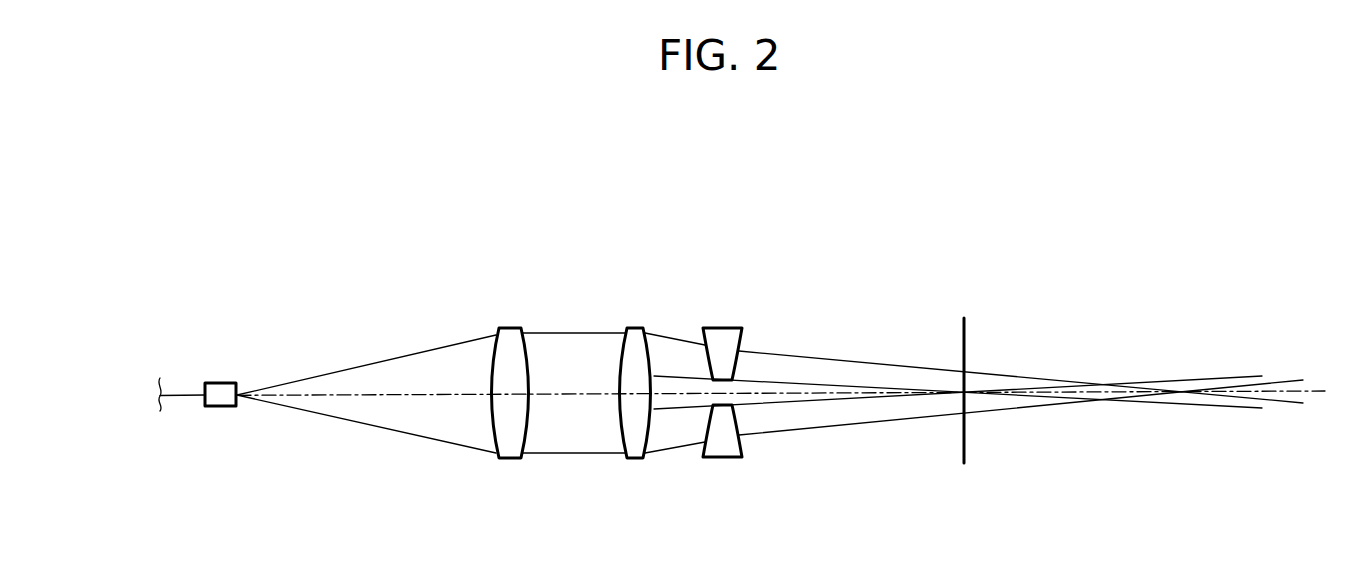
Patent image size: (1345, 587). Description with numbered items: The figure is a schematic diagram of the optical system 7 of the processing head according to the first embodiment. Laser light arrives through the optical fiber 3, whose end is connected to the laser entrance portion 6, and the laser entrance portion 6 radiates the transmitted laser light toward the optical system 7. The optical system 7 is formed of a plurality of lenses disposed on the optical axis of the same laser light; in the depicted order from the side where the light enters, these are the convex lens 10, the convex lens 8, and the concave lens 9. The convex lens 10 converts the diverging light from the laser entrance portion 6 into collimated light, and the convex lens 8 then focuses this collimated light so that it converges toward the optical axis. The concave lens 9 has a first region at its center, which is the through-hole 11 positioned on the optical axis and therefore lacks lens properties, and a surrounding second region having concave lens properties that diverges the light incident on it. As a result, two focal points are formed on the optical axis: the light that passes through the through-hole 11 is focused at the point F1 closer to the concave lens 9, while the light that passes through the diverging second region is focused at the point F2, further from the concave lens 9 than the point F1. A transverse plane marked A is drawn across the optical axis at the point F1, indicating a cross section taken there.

The optical fiber 3 is at (181, 398).
The laser entrance portion 6 is at (219, 381).
The optical system 7 is at (804, 217).
The convex lens 8 is at (636, 461).
The concave lens 9 is at (722, 459).
The convex lens 10 is at (512, 461).
The through-hole 11 is at (724, 380).
The cross-section plane A- A is at (964, 394).
The focal point F1 is at (965, 395).
The focal point F2 is at (1185, 394).